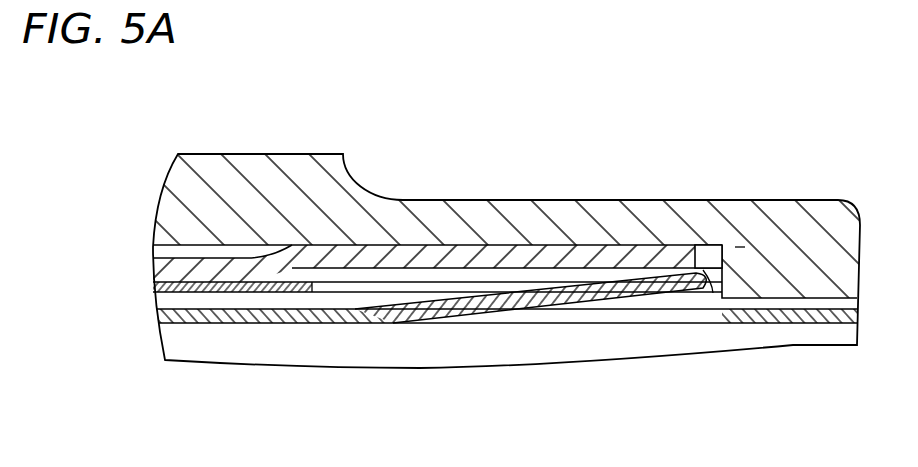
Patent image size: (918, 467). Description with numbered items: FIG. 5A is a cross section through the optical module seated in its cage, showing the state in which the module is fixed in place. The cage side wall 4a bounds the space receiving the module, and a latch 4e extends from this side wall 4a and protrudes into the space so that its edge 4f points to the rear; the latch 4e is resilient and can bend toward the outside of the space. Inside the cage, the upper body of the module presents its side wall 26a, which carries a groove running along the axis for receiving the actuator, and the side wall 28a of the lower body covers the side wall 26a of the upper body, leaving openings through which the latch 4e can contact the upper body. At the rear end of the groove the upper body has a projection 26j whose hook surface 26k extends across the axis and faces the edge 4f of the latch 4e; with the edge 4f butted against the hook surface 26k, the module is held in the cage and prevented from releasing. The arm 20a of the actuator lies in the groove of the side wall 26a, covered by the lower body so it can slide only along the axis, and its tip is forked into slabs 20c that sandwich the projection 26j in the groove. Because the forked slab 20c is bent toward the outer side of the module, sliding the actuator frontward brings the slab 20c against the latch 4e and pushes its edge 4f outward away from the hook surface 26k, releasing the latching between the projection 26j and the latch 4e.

The side wall of the upper body 26a is at (309, 172).
The arm of the actuator 20a is at (529, 250).
The forked slab 20c is at (706, 254).
The hook surface 26k is at (741, 247).
The projection 26j is at (788, 287).
The side wall of the lower body 28a is at (296, 294).
The side wall of the cage 4a is at (222, 317).
The latch 4e is at (587, 300).
The edge of the latch 4f is at (708, 276).